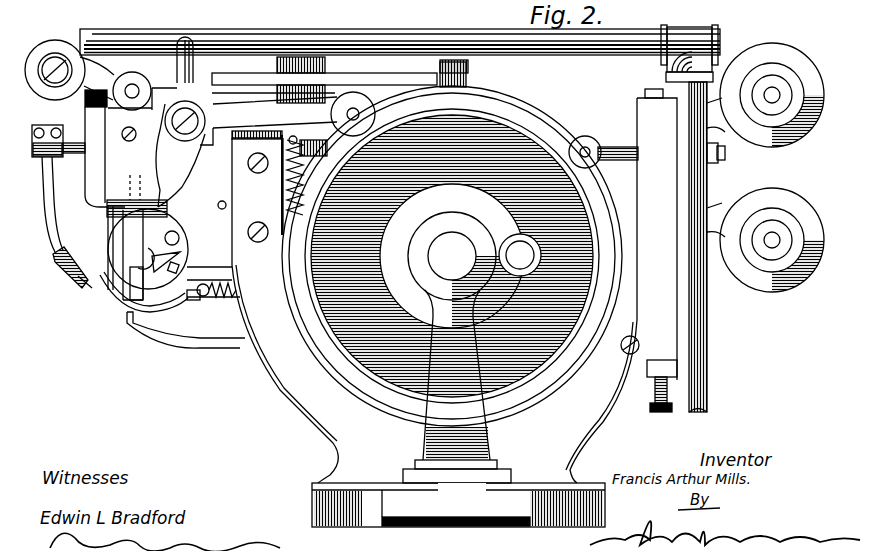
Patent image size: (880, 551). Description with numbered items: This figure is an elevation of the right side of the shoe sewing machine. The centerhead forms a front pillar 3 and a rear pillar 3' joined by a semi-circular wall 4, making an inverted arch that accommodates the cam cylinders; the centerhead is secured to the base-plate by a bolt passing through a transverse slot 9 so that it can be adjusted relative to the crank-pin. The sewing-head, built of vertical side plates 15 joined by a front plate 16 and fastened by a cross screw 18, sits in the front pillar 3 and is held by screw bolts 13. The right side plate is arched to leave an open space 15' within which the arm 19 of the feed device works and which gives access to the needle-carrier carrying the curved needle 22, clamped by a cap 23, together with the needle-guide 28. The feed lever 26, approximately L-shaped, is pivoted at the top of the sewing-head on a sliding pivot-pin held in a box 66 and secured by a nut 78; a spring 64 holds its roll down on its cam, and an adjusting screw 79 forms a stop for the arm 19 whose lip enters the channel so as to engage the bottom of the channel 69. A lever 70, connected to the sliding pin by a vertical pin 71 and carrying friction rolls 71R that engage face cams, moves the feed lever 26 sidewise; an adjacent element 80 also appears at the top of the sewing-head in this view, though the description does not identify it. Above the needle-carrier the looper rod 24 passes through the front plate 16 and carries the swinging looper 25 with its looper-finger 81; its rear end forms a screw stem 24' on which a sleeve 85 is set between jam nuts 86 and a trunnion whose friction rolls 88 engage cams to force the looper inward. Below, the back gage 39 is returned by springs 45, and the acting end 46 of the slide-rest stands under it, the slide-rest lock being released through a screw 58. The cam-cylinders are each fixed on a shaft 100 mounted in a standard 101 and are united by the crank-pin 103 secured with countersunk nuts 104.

The front pillar 3 is at (413, 307).
The rear pillar 3' is at (657, 234).
The semi-circular wall 4 is at (538, 400).
The transverse slot 9 is at (458, 504).
The screw bolts 13 is at (254, 207).
The vertical side plates 15 is at (206, 185).
The open space 15' is at (159, 244).
The front plate 16 is at (105, 157).
The cross screw 18 is at (129, 124).
The arm 19 is at (118, 268).
The curved needle 22 is at (108, 290).
The cap 23 is at (149, 287).
The looper rod 24 is at (58, 131).
The screw stem 24' is at (729, 153).
The looper 25 is at (55, 222).
The feed lever 26 is at (243, 143).
The needle-guide 28 is at (119, 291).
The back gage 39 is at (177, 304).
The springs 45 is at (216, 300).
The acting end of slide-rest 46 is at (127, 322).
The screw 58 is at (658, 398).
The spring 64 is at (287, 188).
The box 66 is at (175, 66).
The bottom of the channel 69 is at (359, 111).
The lever 70 is at (324, 76).
The vertical pin 71 is at (185, 121).
The friction roll 71R is at (475, 90).
The nut 78 is at (180, 155).
The adjusting screw 79 is at (128, 184).
The threaded cylinder 80 is at (282, 78).
The looper-finger 81 is at (78, 278).
The sleeve 85 is at (611, 147).
The jam nuts 86 is at (717, 165).
The friction rolls 88 is at (586, 136).
The shaft 100 is at (452, 256).
The standard 101 is at (457, 386).
The crank-pin 103 is at (542, 249).
The countersunk nuts 104 is at (508, 236).